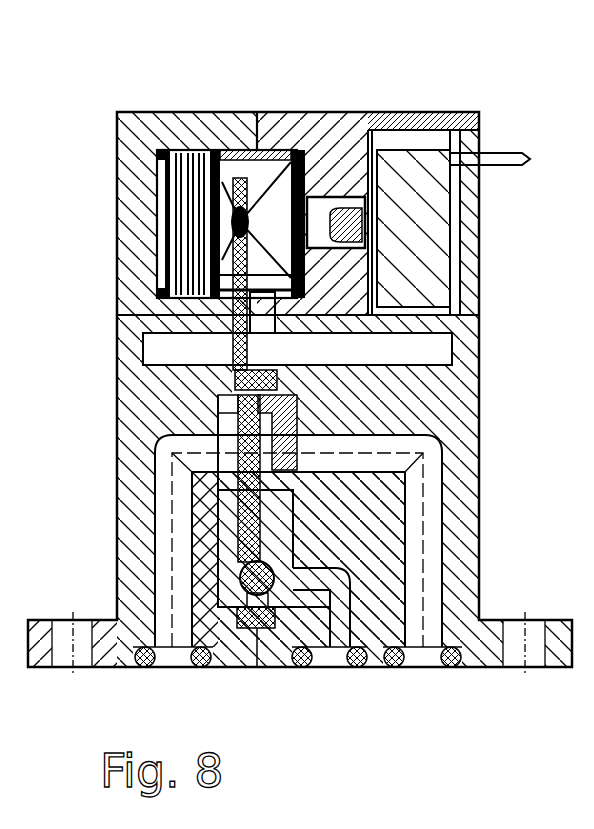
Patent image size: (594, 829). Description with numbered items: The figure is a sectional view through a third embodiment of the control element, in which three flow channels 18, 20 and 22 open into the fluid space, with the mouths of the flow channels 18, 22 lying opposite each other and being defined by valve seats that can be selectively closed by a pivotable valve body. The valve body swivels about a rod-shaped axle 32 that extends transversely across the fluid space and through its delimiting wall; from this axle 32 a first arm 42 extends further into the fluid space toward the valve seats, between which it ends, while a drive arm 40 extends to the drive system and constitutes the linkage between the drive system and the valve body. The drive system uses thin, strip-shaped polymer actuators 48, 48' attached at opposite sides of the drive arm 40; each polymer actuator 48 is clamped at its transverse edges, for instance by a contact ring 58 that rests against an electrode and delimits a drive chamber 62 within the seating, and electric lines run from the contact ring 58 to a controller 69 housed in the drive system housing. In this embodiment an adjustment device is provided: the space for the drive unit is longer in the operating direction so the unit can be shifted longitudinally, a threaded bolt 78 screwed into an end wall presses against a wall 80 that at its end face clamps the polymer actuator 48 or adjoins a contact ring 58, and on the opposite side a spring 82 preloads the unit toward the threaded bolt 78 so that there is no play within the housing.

The flow channel 18 is at (160, 572).
The flow channel 20 is at (330, 600).
The flow channel 22 is at (430, 555).
The axle 32 is at (257, 630).
The drive arm 40 is at (237, 350).
The first arm 42 is at (240, 512).
The polymer actuator 48 is at (108, 224).
The polymer actuator 48' is at (430, 149).
The contact ring 58 is at (291, 160).
The drive chamber 62 is at (240, 158).
The controller 69 is at (437, 245).
The threaded bolt 78 is at (322, 198).
The wall 80 is at (302, 165).
The spring 82 is at (163, 222).